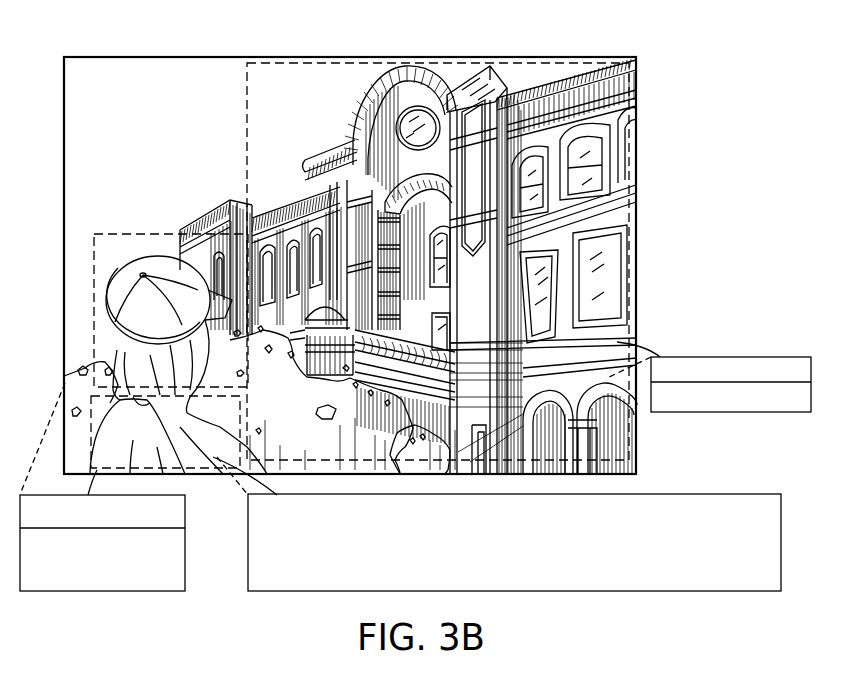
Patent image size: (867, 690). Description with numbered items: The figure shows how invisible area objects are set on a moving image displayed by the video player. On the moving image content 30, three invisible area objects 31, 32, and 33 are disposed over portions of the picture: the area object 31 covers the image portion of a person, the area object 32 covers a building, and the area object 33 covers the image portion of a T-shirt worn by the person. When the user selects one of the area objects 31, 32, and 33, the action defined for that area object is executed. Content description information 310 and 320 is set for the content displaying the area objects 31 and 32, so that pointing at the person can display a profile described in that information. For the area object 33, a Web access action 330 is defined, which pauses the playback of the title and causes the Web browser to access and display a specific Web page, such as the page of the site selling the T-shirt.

The moving image content 30 is at (108, 157).
The area object 31 is at (93, 275).
The area object 32 is at (490, 63).
The area object 33 is at (83, 397).
The content description information 310 is at (127, 591).
The content description information 320 is at (734, 356).
The Web access action 330 is at (647, 591).